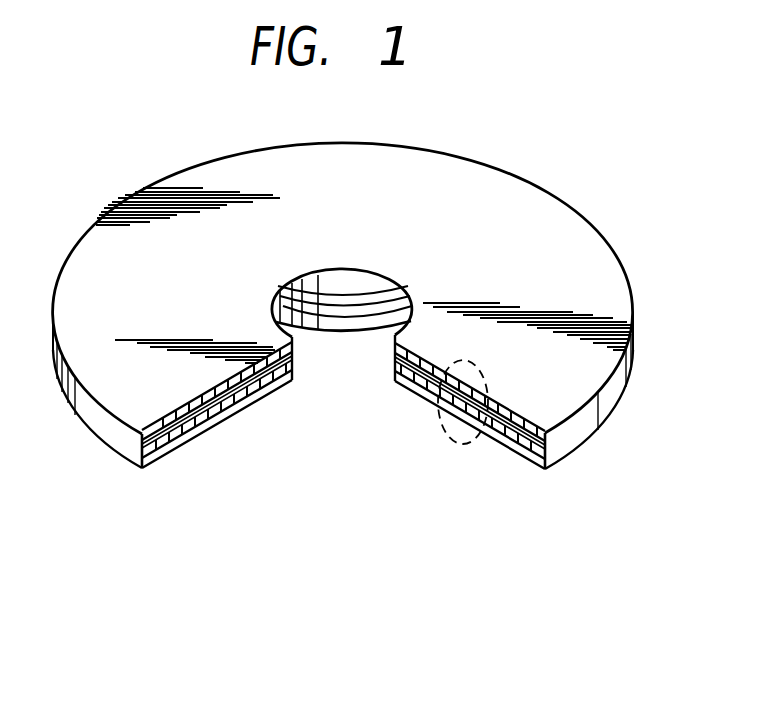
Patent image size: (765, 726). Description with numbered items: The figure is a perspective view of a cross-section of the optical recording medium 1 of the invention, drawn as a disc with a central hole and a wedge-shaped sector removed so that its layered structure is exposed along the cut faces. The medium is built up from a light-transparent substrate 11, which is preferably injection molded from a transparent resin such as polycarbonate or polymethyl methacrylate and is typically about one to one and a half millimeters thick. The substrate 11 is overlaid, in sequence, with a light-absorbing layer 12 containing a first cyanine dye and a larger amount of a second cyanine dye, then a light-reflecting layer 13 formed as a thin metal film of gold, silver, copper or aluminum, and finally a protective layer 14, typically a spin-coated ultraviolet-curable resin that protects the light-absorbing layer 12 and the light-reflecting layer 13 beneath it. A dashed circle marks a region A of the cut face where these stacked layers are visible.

The optical recording medium 1 is at (511, 136).
The light-transparent substrate 11 is at (547, 217).
The light-absorbing layer 12 is at (266, 392).
The light-reflecting layer 13 is at (292, 385).
The protective layer 14 is at (228, 418).
The enlarged portion A is at (463, 416).